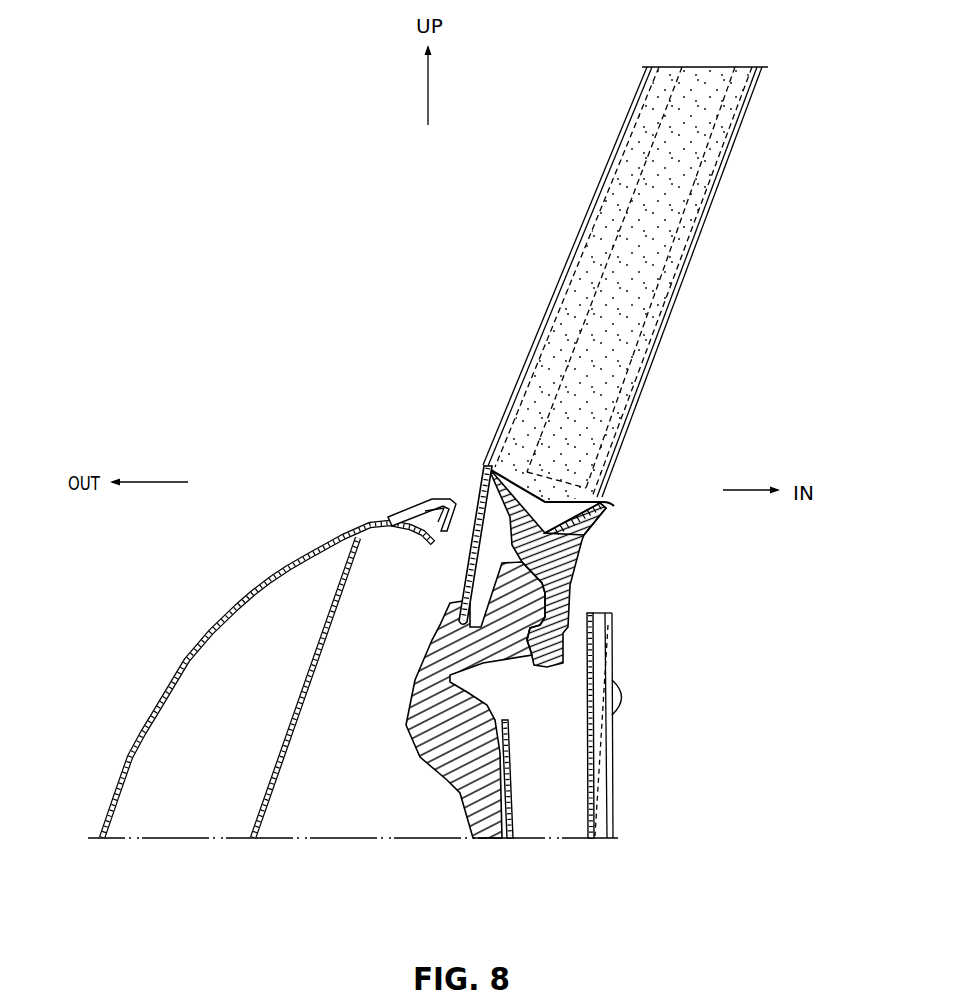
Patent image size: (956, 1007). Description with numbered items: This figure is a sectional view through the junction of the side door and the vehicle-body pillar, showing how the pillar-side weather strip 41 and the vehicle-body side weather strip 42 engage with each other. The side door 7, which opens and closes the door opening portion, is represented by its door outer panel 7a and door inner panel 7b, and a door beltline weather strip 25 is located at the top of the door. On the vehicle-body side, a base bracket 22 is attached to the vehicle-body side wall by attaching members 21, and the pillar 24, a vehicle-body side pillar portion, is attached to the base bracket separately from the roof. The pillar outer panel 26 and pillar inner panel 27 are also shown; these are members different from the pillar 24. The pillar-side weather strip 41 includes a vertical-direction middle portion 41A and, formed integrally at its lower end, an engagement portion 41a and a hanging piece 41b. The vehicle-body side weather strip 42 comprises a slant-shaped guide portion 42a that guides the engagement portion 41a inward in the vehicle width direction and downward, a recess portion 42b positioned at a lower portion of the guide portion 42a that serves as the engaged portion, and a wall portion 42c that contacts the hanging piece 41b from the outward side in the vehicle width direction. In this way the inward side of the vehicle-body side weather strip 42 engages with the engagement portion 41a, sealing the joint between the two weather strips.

The side door 7 is at (263, 680).
The door outer panel 7a is at (153, 718).
The door inner panel 7b is at (290, 728).
The attaching member 21 is at (623, 688).
The base bracket 22 is at (611, 767).
The pillar 24 is at (567, 302).
The door beltline weather strip 25 is at (420, 497).
The pillar outer panel 26 is at (511, 766).
The pillar inner panel 27 is at (588, 826).
The pillar-side weather strip 41 is at (513, 350).
The vertical-direction middle portion 41A is at (586, 207).
The engagement portion 41a is at (572, 600).
The hanging piece 41b is at (460, 574).
The vehicle-body side weather strip 42 is at (494, 712).
The slant-shaped guide portion 42a is at (548, 575).
The recess portion 42b is at (535, 662).
The wall portion 42c is at (448, 607).